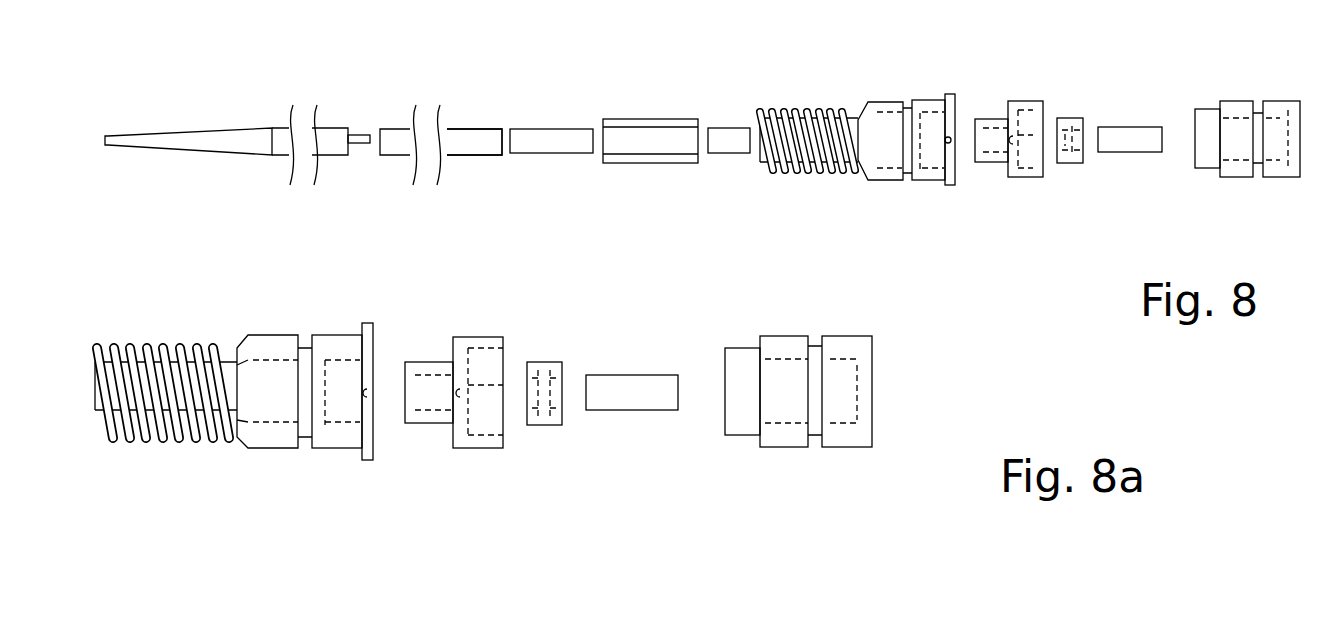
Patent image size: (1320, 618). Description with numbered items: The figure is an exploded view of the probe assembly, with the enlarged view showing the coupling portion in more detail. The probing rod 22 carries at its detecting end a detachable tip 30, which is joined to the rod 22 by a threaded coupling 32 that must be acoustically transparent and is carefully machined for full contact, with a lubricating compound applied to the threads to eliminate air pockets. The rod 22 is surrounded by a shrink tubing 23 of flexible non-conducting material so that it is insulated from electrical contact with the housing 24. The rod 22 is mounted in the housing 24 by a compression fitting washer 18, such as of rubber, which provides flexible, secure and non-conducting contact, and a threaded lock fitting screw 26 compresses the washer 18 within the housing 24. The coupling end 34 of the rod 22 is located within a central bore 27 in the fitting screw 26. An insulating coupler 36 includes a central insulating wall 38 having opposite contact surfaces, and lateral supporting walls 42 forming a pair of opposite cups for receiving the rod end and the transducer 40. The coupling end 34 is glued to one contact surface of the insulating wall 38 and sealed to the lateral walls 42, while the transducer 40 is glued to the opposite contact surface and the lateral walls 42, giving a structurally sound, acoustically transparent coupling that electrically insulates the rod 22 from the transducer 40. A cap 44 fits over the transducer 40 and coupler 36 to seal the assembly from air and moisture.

In FIG. 8, the compression fitting washer 18 is at (620, 138).
In FIG. 8, the probing rod 22 is at (400, 152).
In FIG. 8, the shrink tubing 23 is at (558, 148).
In FIG. 8, the housing 24 is at (877, 105).
In FIG. 8A, the housing 24 is at (268, 438).
In FIG. 8, the threaded lock fitting screw 26 is at (1022, 175).
In FIG. 8A, the threaded lock fitting screw 26 is at (468, 440).
In FIG. 8, the central bore 27 is at (990, 145).
In FIG. 8A, the central bore 27 is at (437, 382).
In FIG. 8, the tip 30 is at (210, 141).
In FIG. 8, the threaded coupling 32 is at (362, 136).
In FIG. 8, the coupling end 34 is at (463, 138).
In FIG. 8, the insulating coupler 36 is at (1075, 163).
In FIG. 8A, the insulating coupler 36 is at (555, 425).
In FIG. 8, the central insulating wall 38 is at (1068, 118).
In FIG. 8A, the central insulating wall 38 is at (543, 378).
In FIG. 8, the transducer 40 is at (1122, 145).
In FIG. 8A, the transducer 40 is at (617, 405).
In FIG. 8, the lateral supporting walls 42 is at (1075, 118).
In FIG. 8A, the lateral supporting walls 42 is at (555, 365).
In FIG. 8, the cap 44 is at (1278, 105).
In FIG. 8A, the cap 44 is at (840, 435).